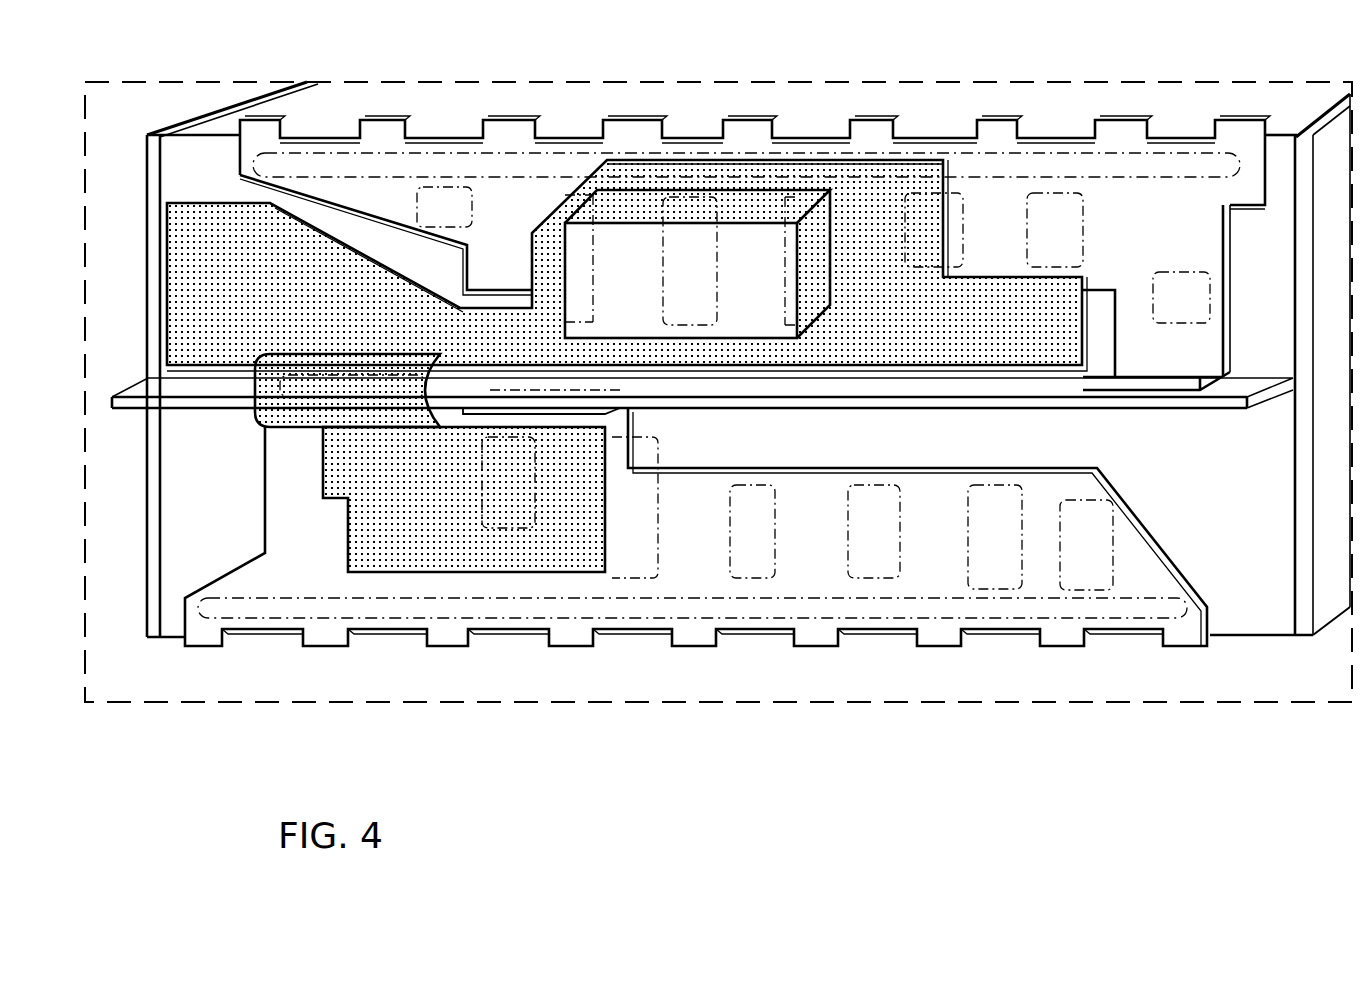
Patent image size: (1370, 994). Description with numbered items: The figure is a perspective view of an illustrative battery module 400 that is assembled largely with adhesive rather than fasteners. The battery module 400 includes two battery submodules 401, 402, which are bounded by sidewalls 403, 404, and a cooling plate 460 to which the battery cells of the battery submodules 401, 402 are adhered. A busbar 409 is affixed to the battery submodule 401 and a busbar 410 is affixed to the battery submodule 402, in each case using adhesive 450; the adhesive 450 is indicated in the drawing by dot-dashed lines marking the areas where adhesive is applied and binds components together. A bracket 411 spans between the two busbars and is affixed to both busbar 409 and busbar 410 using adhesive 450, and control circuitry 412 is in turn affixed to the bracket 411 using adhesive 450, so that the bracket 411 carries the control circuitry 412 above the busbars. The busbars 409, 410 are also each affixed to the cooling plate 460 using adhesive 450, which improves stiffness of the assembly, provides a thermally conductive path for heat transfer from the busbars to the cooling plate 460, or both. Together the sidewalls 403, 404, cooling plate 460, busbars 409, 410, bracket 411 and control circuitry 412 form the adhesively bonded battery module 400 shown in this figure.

The battery module 400 is at (707, 44).
The battery submodule 401 is at (1285, 346).
The battery submodule 402 is at (1229, 506).
The sidewall 403 is at (1332, 607).
The sidewall 404 is at (162, 640).
The busbar 409 is at (1193, 236).
The busbar 410 is at (716, 524).
The bracket 411 is at (915, 334).
The control circuitry 412 is at (652, 294).
The adhesive 450 is at (817, 617).
The cooling plate 460 is at (1250, 402).